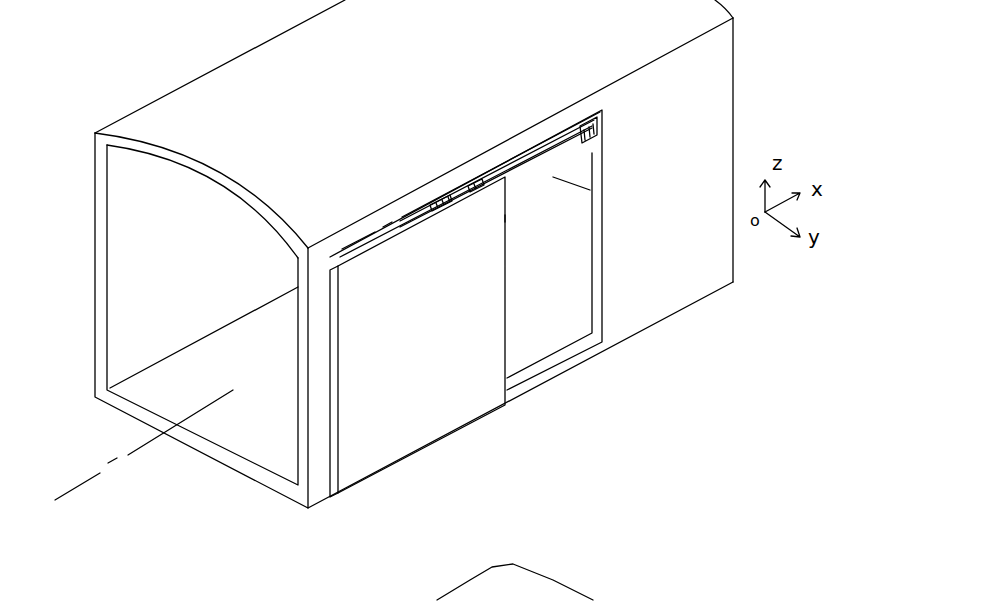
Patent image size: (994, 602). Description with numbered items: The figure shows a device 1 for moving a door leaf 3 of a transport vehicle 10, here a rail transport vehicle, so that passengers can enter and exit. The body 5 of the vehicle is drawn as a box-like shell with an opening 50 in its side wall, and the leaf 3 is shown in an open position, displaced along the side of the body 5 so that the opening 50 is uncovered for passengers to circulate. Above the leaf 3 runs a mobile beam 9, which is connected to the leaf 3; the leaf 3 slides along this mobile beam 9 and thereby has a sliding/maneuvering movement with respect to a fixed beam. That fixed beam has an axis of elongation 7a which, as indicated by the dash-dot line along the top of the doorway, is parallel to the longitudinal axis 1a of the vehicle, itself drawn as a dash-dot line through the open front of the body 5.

The device 1 is at (622, 121).
The longitudinal axis 1a is at (148, 450).
The leaf 3 is at (443, 428).
The body 5 is at (128, 222).
The axis of elongation 7a is at (372, 233).
The mobile beam 9 is at (520, 178).
The vehicle 10 is at (301, 514).
The opening 50 is at (585, 293).